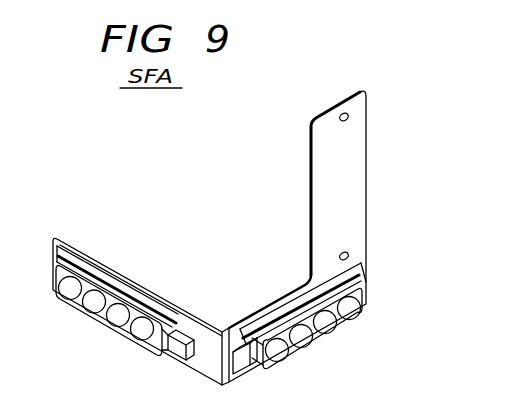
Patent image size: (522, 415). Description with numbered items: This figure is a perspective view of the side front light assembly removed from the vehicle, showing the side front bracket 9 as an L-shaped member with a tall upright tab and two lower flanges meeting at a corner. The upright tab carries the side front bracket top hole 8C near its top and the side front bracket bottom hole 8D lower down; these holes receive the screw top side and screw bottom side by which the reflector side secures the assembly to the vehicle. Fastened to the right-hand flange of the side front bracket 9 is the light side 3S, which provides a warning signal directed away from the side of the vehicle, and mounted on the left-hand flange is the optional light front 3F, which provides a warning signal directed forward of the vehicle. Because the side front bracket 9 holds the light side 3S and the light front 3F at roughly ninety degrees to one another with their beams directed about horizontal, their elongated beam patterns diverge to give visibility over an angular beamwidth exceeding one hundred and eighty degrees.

The side front bracket 9 is at (347, 183).
The side front bracket top hole 8C is at (343, 112).
The side front bracket bottom hole 8D is at (347, 254).
The light side 3S is at (357, 308).
The light front 3F is at (105, 323).